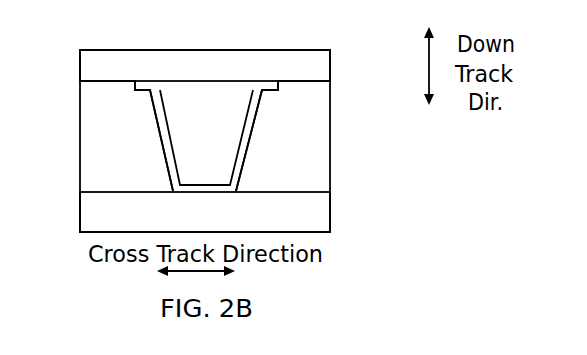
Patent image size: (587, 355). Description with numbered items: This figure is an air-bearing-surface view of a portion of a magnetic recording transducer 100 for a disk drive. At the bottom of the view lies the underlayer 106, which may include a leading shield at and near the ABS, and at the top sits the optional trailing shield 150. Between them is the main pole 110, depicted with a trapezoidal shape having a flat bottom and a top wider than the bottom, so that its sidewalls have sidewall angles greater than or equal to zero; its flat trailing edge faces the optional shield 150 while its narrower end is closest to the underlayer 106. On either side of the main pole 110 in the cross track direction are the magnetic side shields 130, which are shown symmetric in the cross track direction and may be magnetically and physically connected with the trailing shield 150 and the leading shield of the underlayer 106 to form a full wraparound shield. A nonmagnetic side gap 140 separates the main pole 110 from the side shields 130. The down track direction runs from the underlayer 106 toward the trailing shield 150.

The transducer 100 is at (225, 22).
The optional trailing shield 150 is at (205, 65).
The underlayer 106 is at (205, 212).
The side shields 130 is at (36, 137).
The side gap 140 is at (253, 128).
The main pole 110 is at (206, 137).